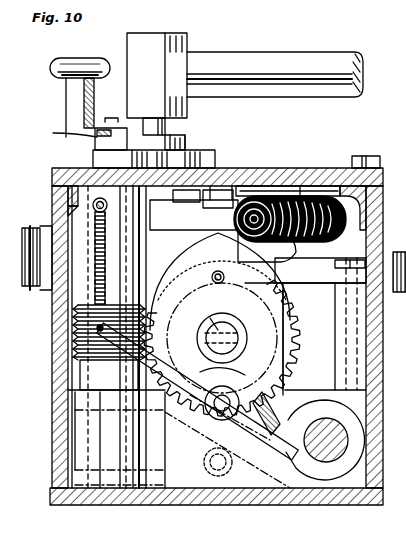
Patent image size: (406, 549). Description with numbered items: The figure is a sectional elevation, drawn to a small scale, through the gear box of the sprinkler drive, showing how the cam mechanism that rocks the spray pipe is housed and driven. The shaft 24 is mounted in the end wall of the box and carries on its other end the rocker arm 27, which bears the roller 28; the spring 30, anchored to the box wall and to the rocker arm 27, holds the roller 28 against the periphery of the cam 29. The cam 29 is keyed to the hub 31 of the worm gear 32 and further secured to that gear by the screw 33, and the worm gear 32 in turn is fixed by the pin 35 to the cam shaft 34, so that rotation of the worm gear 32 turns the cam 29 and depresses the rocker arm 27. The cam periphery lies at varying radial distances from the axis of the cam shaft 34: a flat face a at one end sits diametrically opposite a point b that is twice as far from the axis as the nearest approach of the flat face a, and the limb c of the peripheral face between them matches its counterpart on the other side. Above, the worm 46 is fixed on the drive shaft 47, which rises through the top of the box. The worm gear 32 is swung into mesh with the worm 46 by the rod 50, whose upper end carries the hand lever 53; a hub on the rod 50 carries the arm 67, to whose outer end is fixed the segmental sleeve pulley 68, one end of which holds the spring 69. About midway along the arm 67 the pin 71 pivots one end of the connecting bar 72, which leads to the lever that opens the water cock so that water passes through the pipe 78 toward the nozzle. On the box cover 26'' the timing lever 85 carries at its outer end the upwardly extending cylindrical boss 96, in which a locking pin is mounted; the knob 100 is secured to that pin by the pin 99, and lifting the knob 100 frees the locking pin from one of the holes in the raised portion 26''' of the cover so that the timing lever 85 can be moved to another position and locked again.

The shaft 24 is at (340, 446).
The box cover 26'' is at (317, 162).
The raised portion of the box cover 26''' is at (201, 325).
The rocker arm 27 is at (192, 322).
The roller 28 is at (215, 412).
The cam 29 is at (284, 283).
The spring 30 is at (107, 207).
The hub of the worm gear 31 is at (238, 324).
The worm gear 32 is at (300, 367).
The screw 33 is at (218, 272).
The cam shaft 34 is at (230, 346).
The pin 35 is at (210, 322).
The worm 46 is at (76, 328).
The drive shaft 47 is at (53, 133).
The rod 50 is at (170, 140).
The hand lever 53 is at (260, 58).
The arm 67 is at (223, 226).
The segmental sleeve pulley 68 is at (292, 196).
The spring 69 is at (334, 196).
The pin 71 is at (214, 196).
The connecting bar 72 is at (234, 196).
The pipe 78 is at (30, 232).
The timing lever 85 is at (105, 120).
The cylindrical boss 96 is at (66, 94).
The pin 99 is at (80, 68).
The knob 100 is at (60, 62).
The flat face a is at (222, 373).
The point b is at (222, 238).
The limb c is at (300, 290).